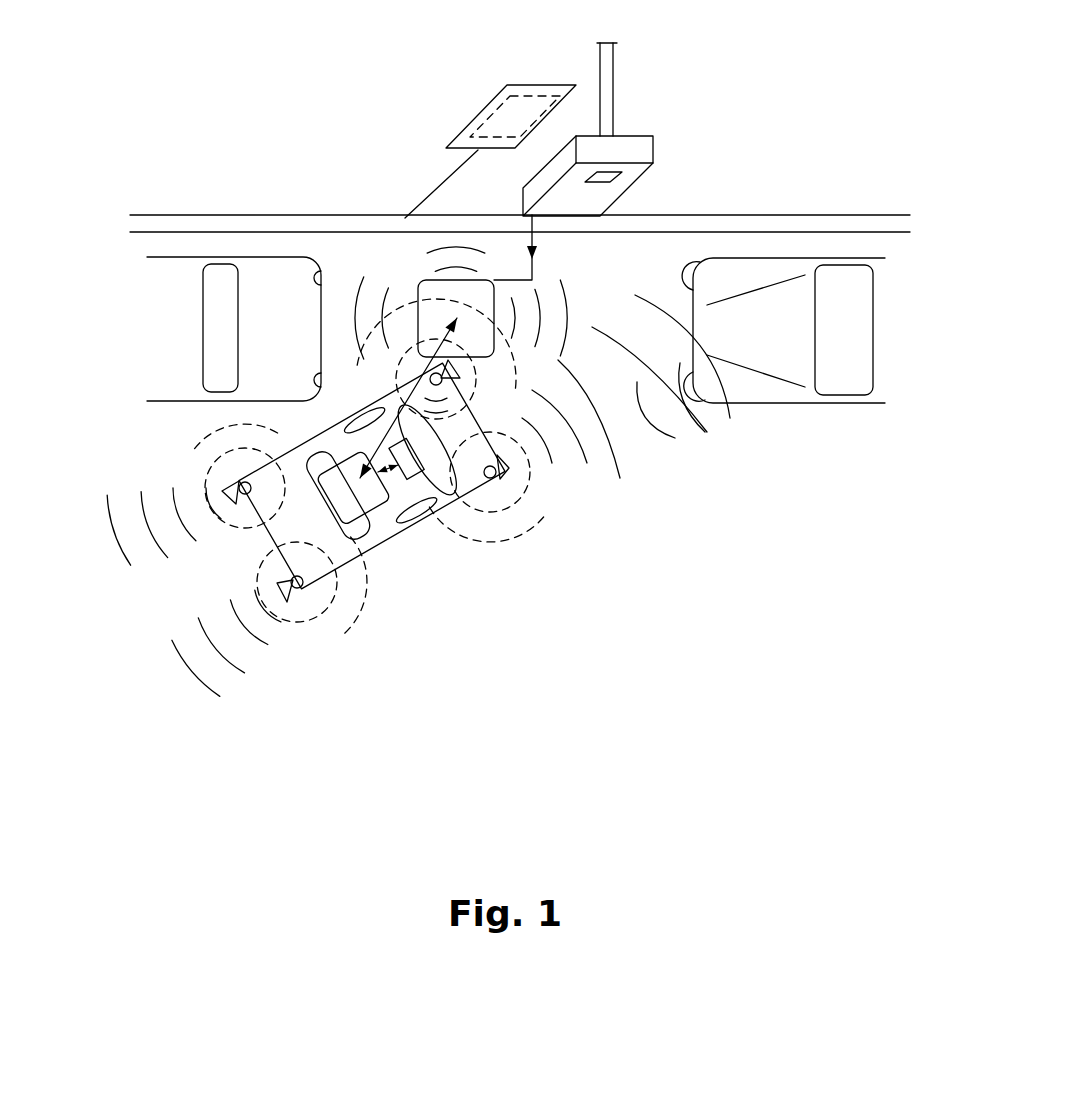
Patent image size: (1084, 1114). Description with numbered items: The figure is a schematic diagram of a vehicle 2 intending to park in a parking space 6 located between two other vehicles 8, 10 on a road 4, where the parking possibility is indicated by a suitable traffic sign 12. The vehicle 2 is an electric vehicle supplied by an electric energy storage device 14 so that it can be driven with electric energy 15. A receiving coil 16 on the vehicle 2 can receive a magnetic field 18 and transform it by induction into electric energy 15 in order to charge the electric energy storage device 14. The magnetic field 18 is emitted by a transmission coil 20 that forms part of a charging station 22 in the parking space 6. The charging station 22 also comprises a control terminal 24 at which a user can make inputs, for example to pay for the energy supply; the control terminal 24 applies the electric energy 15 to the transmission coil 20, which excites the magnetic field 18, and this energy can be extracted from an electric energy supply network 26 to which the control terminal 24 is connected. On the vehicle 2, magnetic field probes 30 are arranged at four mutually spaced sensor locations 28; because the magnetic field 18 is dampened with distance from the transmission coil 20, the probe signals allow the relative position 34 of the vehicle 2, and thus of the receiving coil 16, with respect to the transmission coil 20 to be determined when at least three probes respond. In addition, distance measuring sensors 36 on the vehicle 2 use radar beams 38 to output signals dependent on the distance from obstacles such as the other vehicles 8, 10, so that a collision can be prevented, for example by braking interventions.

The vehicle 2 is at (398, 537).
The road 4 is at (712, 672).
The parking space 6 is at (640, 267).
The other vehicle 8 is at (175, 256).
The other vehicle 10 is at (800, 260).
The traffic sign 12 is at (492, 103).
The electric energy storage device 14 is at (450, 498).
The electric energy 15 is at (536, 262).
The receiving coil 16 is at (370, 525).
The magnetic field 18 is at (376, 306).
The transmission coil 20 is at (418, 292).
The charging station 22 is at (646, 121).
The control terminal 24 is at (653, 153).
The electric energy supply network 26 is at (613, 60).
The sensor location 28 is at (470, 372).
The magnetic field probe 30 is at (437, 380).
The relative position 34 is at (385, 443).
The distance measuring sensor 36 is at (526, 471).
The radar beam 38 is at (115, 543).